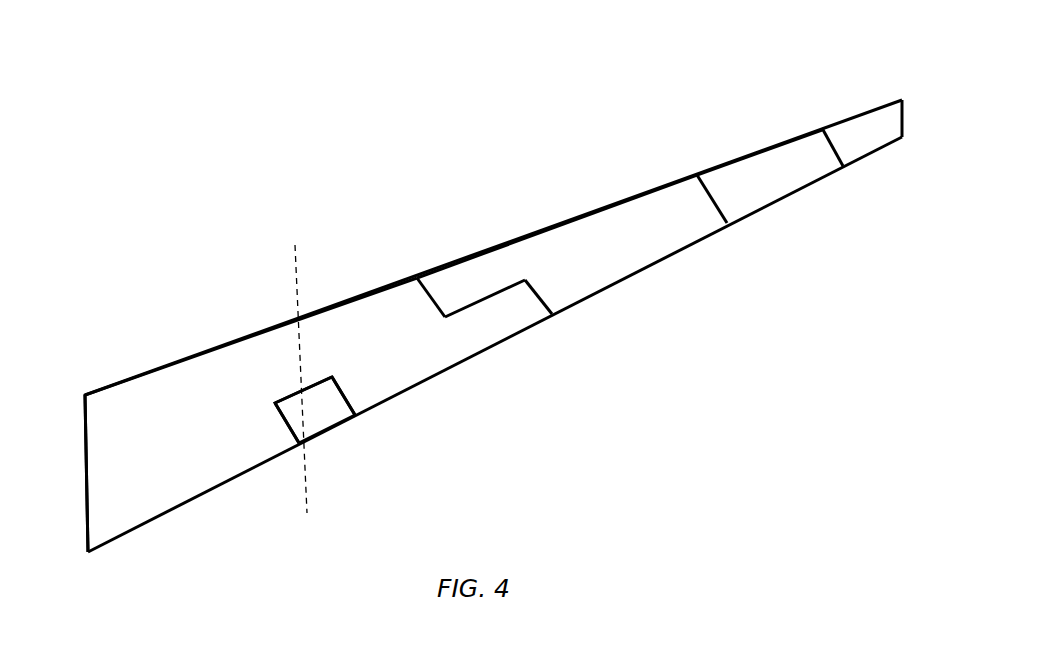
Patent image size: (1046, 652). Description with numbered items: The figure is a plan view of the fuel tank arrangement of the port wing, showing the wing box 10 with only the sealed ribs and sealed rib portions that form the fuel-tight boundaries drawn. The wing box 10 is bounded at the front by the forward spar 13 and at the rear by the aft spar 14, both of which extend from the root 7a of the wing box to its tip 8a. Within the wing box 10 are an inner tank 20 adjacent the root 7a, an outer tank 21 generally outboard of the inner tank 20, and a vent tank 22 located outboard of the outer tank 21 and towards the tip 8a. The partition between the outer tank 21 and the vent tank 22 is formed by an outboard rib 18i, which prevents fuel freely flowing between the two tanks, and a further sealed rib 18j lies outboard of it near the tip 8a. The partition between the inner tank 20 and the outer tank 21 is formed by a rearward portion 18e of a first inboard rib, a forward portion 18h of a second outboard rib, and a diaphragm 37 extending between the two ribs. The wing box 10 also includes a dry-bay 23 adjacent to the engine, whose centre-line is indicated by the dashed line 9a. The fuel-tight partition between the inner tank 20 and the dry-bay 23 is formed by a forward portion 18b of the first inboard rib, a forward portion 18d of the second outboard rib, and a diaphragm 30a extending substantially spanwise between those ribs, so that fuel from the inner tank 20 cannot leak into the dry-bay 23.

The wing box 10 is at (501, 284).
The aft spar 14 is at (528, 233).
The forward spar 13 is at (665, 257).
The root of the wing box 7a is at (86, 473).
The tip of the wing box 8a is at (907, 120).
The outboard rib 18i is at (708, 187).
The sealed rib 18j is at (832, 140).
The rearward portion of first (inboard) rib 18e is at (432, 292).
The diaphragm 37 is at (492, 298).
The forward portion of second (outboard) rib 18h is at (543, 297).
The diaphragm 30a is at (318, 378).
The forward portion of first (inboard) rib 18b is at (289, 430).
The forward portion of second (outboard) rib 18d is at (342, 423).
The dry-bay 23 is at (290, 413).
The inner tank 20 is at (212, 372).
The outer tank 21 is at (630, 222).
The vent tank 22 is at (775, 178).
The engine centre-line 9a is at (296, 256).